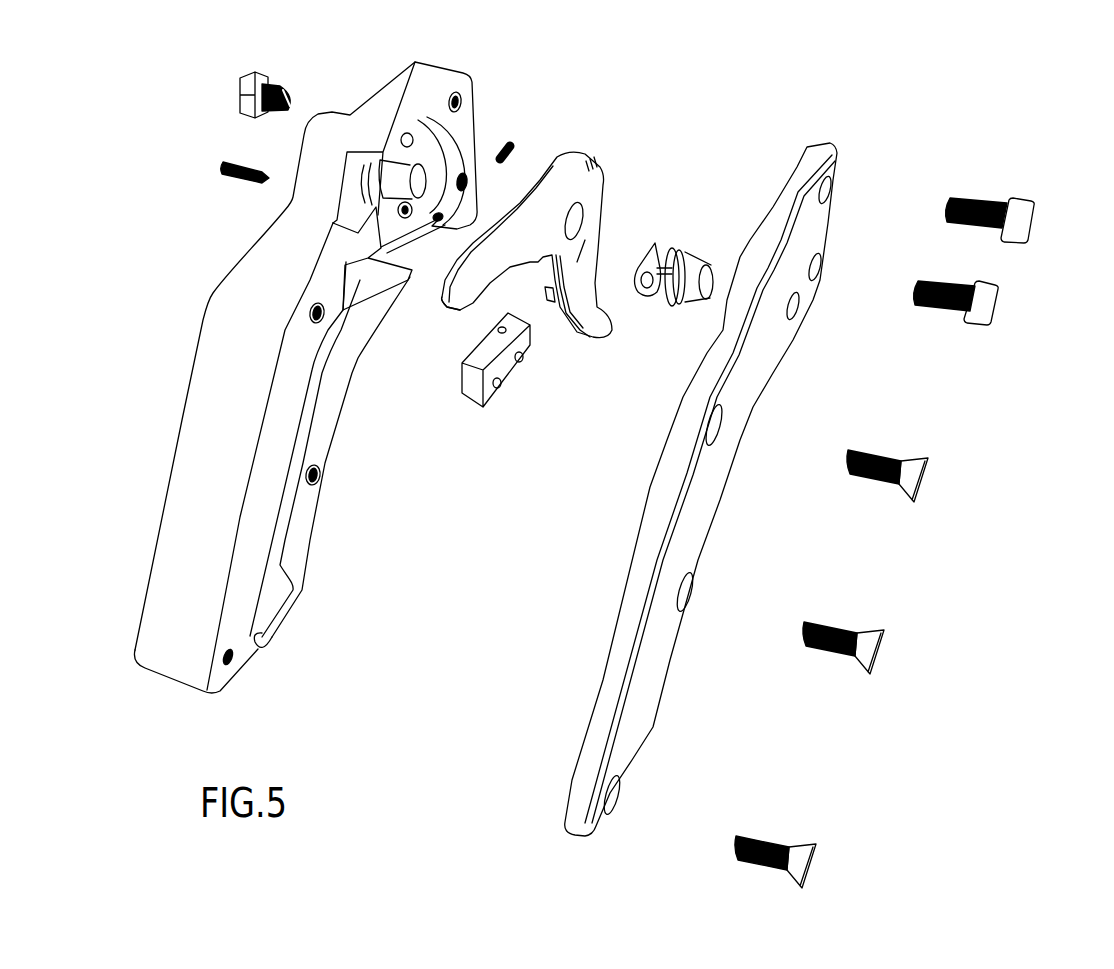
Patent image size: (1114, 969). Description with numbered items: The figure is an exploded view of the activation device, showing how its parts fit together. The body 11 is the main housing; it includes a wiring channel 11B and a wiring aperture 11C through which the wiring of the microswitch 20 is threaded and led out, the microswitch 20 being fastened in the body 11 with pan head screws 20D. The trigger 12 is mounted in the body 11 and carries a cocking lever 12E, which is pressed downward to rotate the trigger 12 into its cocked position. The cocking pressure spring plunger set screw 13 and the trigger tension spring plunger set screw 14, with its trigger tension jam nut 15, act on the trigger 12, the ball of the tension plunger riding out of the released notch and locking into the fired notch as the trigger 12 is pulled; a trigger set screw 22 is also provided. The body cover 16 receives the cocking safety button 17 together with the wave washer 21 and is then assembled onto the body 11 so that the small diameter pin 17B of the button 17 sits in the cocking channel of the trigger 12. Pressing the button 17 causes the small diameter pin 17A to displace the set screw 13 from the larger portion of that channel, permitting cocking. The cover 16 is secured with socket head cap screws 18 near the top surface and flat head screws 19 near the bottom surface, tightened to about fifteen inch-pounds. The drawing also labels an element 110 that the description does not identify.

The body 11 is at (210, 380).
The wiring channel 11B is at (288, 493).
The wiring aperture 11C is at (265, 643).
The pivot pin 110 is at (421, 145).
The trigger 12 is at (593, 323).
The cocking lever 12E is at (443, 315).
The cocking pressure spring plunger set screw 13 is at (222, 170).
The trigger tension spring plunger set screw 14 is at (242, 114).
The trigger tension jam nut 15 is at (237, 97).
The body cover 16 is at (648, 702).
The cocking safety button 17 is at (693, 265).
The small diameter pin 17A is at (680, 252).
The small diameter pin 17B is at (655, 275).
The socket head cap screws 18 is at (1013, 220).
The flat head screws 19 is at (913, 473).
The microswitch 20 is at (473, 393).
The pan head screws 20D is at (518, 362).
The wave washer 21 is at (652, 245).
The trigger set screw 22 is at (518, 138).